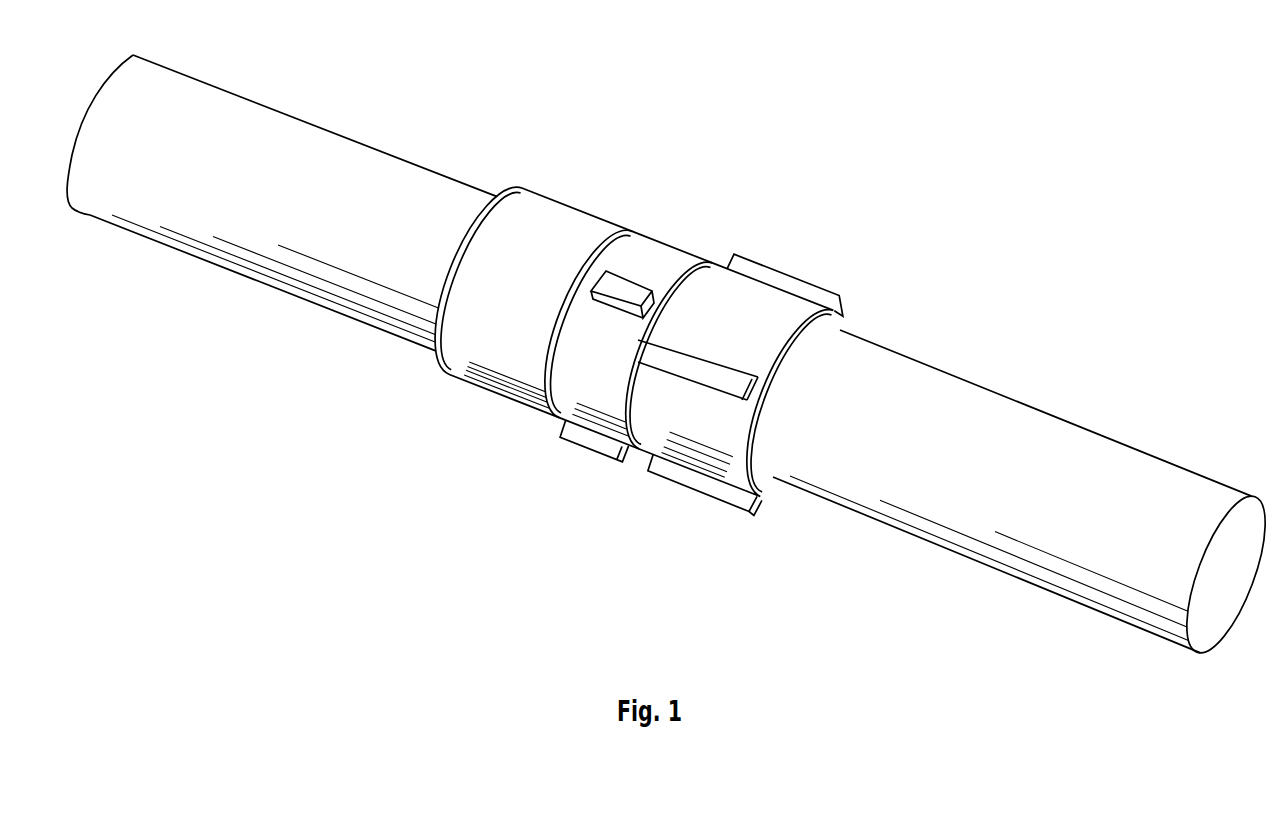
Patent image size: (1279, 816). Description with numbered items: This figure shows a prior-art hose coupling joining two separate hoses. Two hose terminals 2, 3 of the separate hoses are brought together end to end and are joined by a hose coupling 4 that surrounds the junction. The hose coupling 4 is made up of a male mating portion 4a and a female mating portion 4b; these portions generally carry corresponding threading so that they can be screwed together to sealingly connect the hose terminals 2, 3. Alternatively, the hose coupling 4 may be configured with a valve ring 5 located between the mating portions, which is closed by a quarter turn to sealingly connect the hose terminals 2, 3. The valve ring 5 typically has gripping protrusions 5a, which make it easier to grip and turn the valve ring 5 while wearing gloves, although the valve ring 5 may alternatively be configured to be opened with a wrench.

The hose terminal 2 is at (320, 126).
The hose terminal 3 is at (1007, 400).
The hose coupling 4 is at (619, 336).
The male mating portion 4a is at (500, 360).
The female mating portion 4b is at (717, 452).
The valve ring 5 is at (642, 352).
The gripping protrusion 5a is at (587, 453).